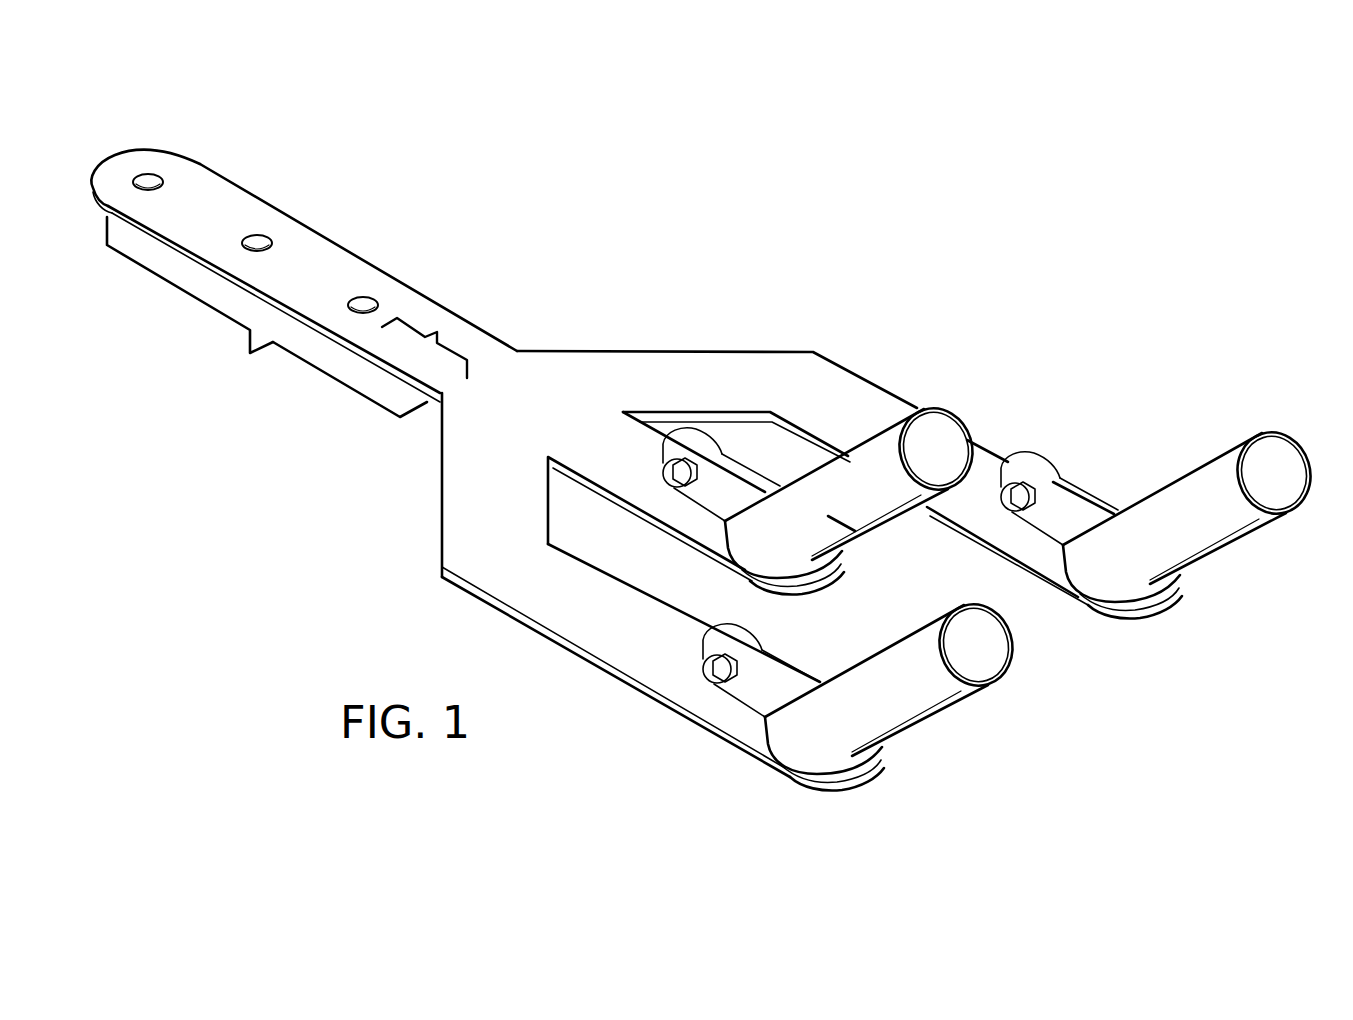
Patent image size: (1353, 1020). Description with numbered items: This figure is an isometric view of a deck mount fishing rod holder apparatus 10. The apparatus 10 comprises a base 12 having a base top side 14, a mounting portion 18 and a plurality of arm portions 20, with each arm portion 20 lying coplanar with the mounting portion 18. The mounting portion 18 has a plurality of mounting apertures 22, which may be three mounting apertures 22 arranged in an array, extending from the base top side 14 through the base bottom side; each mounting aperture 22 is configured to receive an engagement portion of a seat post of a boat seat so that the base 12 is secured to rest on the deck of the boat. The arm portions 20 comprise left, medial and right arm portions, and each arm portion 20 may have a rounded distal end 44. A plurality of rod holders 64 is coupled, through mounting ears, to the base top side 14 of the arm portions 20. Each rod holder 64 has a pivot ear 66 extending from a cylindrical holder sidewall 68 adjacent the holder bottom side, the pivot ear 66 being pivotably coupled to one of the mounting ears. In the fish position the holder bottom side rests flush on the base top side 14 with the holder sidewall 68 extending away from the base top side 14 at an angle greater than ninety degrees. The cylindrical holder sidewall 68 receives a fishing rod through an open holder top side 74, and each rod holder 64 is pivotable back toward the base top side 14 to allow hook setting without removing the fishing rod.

The deck mount fishing rod holder apparatus 10 is at (930, 109).
The base 12 is at (518, 350).
The base top side 14 is at (437, 332).
The mounting portion 18 is at (250, 353).
The arm portions 20 is at (515, 567).
The mounting apertures 22 is at (363, 303).
The rounded distal end 44 is at (858, 778).
The rod holders 64 is at (908, 663).
The pivot ear 66 is at (753, 683).
The cylindrical holder sidewall 68 is at (915, 705).
The open holder top side 74 is at (983, 660).